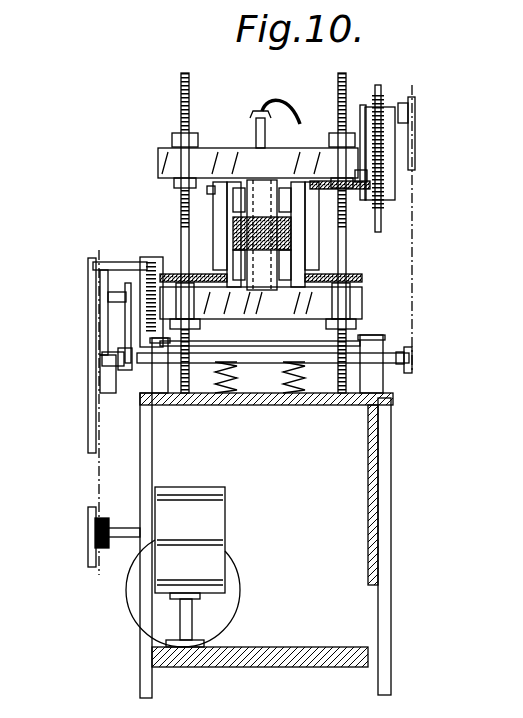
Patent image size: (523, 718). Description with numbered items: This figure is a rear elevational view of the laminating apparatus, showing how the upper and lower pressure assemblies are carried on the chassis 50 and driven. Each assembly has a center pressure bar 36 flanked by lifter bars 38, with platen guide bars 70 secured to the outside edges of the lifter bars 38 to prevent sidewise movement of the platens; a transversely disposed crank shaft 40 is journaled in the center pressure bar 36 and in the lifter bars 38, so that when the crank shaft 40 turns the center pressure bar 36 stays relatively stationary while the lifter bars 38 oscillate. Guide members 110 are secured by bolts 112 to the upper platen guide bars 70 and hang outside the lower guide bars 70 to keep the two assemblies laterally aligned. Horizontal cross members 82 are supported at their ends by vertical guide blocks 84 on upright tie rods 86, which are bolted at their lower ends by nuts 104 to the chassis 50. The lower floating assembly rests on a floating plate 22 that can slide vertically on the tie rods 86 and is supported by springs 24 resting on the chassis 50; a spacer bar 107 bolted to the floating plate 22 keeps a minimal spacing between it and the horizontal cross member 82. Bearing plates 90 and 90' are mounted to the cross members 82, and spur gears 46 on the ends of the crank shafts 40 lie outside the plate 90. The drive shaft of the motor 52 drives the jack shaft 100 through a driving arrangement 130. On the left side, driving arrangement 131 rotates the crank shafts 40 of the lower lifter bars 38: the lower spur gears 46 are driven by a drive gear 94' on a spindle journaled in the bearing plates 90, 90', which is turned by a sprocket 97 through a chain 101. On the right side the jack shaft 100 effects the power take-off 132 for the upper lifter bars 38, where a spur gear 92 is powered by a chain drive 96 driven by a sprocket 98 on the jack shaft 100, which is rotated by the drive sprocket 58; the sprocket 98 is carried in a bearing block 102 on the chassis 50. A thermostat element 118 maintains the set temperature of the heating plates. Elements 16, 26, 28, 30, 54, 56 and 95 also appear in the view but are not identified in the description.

The machine 16 is at (282, 410).
The floating plate 22 is at (370, 338).
The springs 24 is at (232, 405).
The lower die 26 is at (294, 250).
The material being pressed 28 is at (292, 232).
The side block 30 is at (308, 220).
The center pressure bar 36 is at (282, 184).
The lifter bars 38 is at (238, 164).
The crank shaft 40 is at (390, 158).
The spur gears 46 is at (376, 222).
The chassis 50 is at (152, 466).
The motor 52 is at (240, 582).
The motor shaft 54 is at (95, 532).
The lower disc 56 is at (90, 478).
The drive sprocket 58 is at (92, 296).
The platen guide bars 70 is at (218, 222).
The horizontal cross members 82 is at (165, 163).
The vertical guide blocks 84 is at (190, 150).
The tie rods 86 is at (181, 95).
The bearing plate 90 is at (251, 204).
The bearing plate 90' is at (92, 305).
The spur gear 92 is at (388, 104).
The drive gear 94' is at (105, 244).
The hub 95 is at (416, 107).
The chain drive 96 is at (420, 288).
The sprocket 97 is at (126, 300).
The sprocket 98 is at (414, 364).
The jack shaft 100 is at (115, 385).
The chain 101 is at (120, 305).
The bearing block 102 is at (164, 395).
The nuts 104 is at (326, 395).
The spacer bar 107 is at (208, 342).
The guide members 110 is at (228, 215).
The bolts 112 is at (210, 190).
The thermostat element 118 is at (256, 128).
The driving arrangement 130 is at (86, 457).
The driving arrangement 131 is at (100, 314).
The power take-off 132 is at (414, 262).